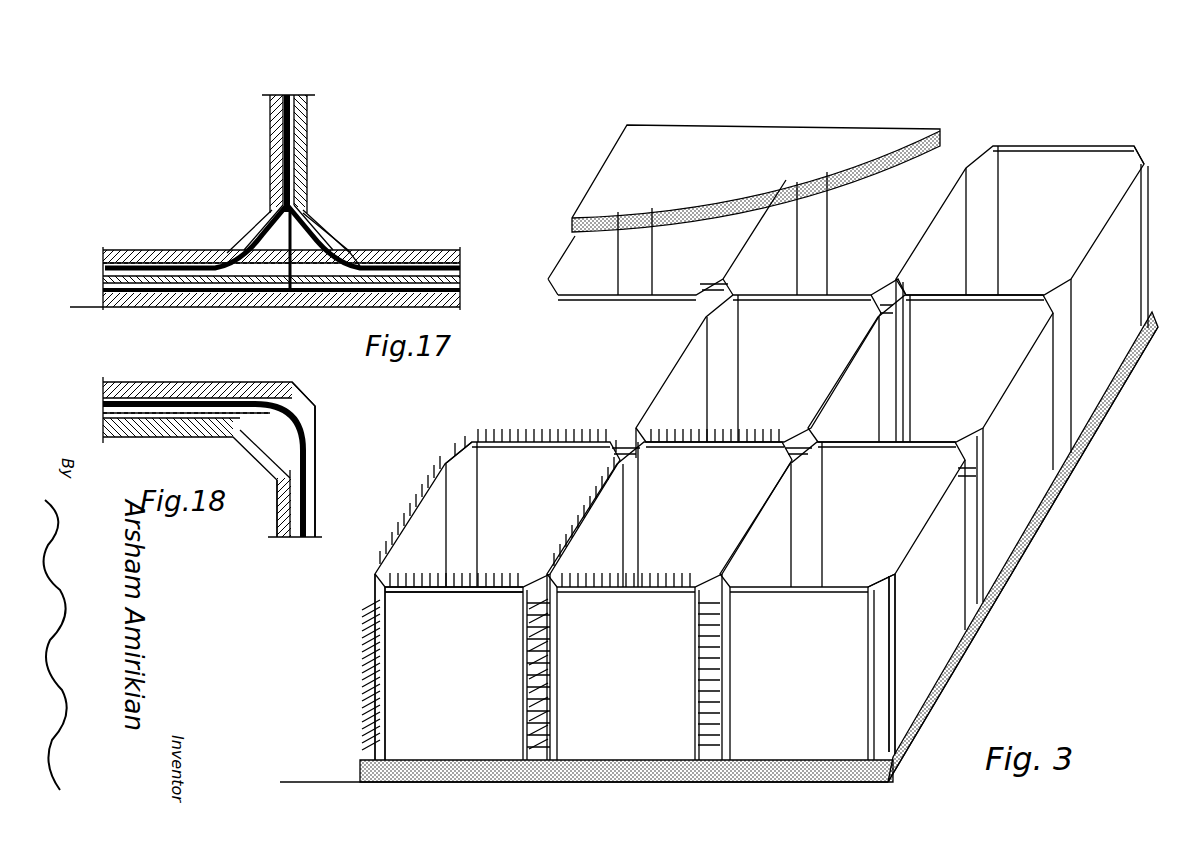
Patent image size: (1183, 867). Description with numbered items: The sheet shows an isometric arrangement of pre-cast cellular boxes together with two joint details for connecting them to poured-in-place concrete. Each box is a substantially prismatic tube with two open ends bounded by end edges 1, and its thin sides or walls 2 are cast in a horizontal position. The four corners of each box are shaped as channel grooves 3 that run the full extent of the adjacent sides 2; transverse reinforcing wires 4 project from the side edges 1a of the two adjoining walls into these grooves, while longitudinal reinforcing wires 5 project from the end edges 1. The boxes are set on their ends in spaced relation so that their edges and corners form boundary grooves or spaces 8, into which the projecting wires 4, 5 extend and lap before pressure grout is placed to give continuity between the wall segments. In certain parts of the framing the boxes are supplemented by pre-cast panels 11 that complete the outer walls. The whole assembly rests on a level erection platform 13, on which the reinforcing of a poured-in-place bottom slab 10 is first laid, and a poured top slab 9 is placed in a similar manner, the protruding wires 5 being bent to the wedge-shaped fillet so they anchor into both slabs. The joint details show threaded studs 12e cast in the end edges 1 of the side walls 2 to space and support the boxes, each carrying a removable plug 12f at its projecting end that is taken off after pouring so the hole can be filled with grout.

In FIG. 3, the end edges 1 is at (452, 590).
In FIG. 18, the end edges 1 is at (315, 486).
In FIG. 3, the side edges 1a is at (380, 636).
In FIG. 3, the sides or walls 2 is at (1135, 226).
In FIG. 17, the sides or walls 2 is at (308, 161).
In FIG. 18, the sides or walls 2 is at (312, 527).
In FIG. 3, the channel grooves 3 is at (469, 436).
In FIG. 3, the transverse reinforcing wires 4 is at (362, 640).
In FIG. 3, the longitudinal reinforcing wires 5 is at (488, 428).
In FIG. 17, the longitudinal reinforcing wires 5 is at (256, 228).
In FIG. 18, the longitudinal reinforcing wires 5 is at (306, 501).
In FIG. 3, the boundary grooves or spaces 8 is at (713, 298).
In FIG. 3, the top slab 9 is at (687, 137).
In FIG. 18, the top slab 9 is at (200, 382).
In FIG. 3, the bottom slab 10 is at (562, 779).
In FIG. 17, the bottom slab 10 is at (163, 250).
In FIG. 3, the pre-cast panels 11 is at (626, 752).
In FIG. 17, the threaded studs 12e is at (355, 243).
In FIG. 17, the removable plug 12f is at (308, 292).
In FIG. 3, the erection platform 13 is at (334, 780).
In FIG. 17, the erection platform 13 is at (93, 309).